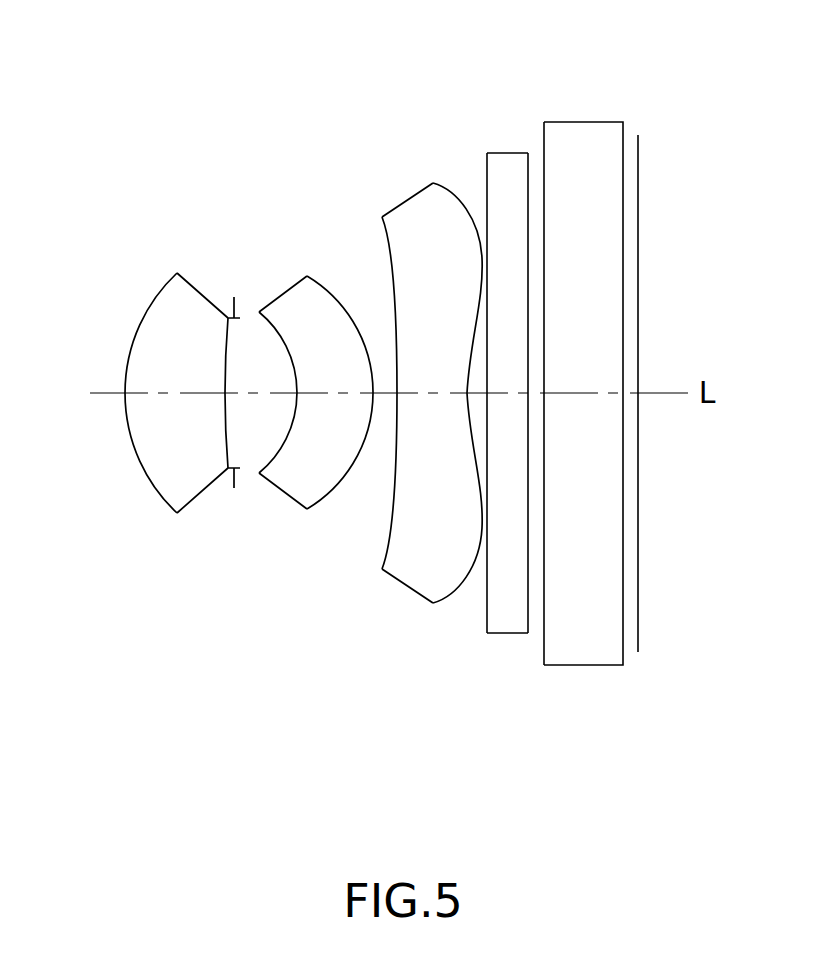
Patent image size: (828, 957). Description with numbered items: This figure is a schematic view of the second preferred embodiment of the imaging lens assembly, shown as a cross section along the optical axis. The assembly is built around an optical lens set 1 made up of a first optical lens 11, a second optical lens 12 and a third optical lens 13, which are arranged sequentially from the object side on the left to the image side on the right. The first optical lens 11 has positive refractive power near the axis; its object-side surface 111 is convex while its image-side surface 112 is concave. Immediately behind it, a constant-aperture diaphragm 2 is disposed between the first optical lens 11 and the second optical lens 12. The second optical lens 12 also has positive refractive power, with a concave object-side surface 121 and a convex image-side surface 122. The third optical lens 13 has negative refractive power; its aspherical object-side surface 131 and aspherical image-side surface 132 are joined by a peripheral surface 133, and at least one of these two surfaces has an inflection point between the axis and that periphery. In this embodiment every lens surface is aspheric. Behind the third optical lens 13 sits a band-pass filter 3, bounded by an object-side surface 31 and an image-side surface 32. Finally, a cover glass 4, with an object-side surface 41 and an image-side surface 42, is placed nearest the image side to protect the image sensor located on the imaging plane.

The optical lens set 1 is at (128, 600).
The first optical lens 11 is at (151, 431).
The object-side surface of first optical lens 111 is at (138, 322).
The image-side surface of first optical lens 112 is at (227, 403).
The second optical lens 12 is at (298, 402).
The object-side surface of second optical lens 121 is at (273, 330).
The image-side surface of second optical lens 122 is at (327, 298).
The third optical lens 13 is at (410, 392).
The object-side surface of third optical lens 131 is at (395, 518).
The image-side surface of third optical lens 132 is at (468, 573).
The peripheral surface 133 is at (398, 205).
The constant-aperture diaphragm 2 is at (233, 486).
The filter 3 is at (499, 384).
The object-side surface of filter 31 is at (485, 177).
The image-side surface of filter 32 is at (529, 172).
The cover glass 4 is at (581, 335).
The object-side surface of cover glass 41 is at (544, 137).
The image-side surface of cover glass 42 is at (639, 143).